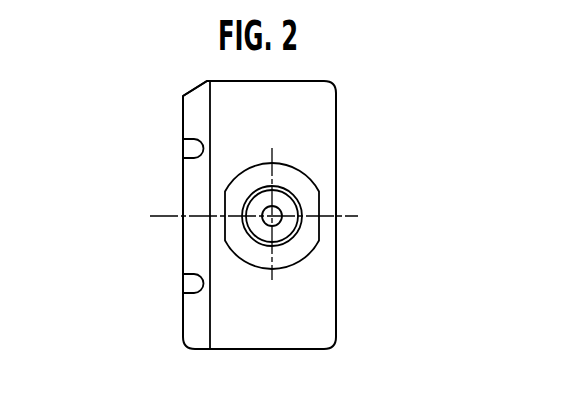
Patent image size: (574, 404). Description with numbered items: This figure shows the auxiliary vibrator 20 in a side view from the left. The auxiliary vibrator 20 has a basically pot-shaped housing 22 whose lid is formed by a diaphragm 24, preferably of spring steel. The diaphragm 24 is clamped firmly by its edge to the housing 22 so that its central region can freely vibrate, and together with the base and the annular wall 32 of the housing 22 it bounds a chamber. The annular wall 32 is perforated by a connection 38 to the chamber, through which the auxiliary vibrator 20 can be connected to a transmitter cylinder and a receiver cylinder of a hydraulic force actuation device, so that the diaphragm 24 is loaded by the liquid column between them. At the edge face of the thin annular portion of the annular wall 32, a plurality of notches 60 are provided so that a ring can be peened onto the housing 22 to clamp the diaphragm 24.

The auxiliary vibrator 20 is at (340, 81).
The housing 22 is at (234, 78).
The diaphragm 24 is at (179, 120).
The annular wall 32 is at (280, 117).
The connection 38 is at (284, 207).
The notch 60 is at (187, 284).